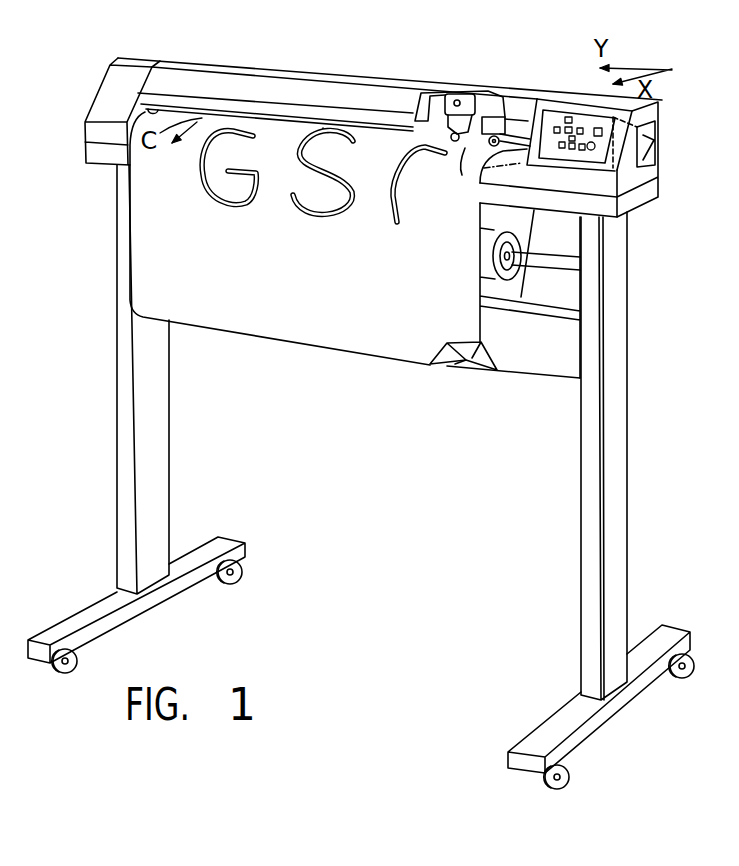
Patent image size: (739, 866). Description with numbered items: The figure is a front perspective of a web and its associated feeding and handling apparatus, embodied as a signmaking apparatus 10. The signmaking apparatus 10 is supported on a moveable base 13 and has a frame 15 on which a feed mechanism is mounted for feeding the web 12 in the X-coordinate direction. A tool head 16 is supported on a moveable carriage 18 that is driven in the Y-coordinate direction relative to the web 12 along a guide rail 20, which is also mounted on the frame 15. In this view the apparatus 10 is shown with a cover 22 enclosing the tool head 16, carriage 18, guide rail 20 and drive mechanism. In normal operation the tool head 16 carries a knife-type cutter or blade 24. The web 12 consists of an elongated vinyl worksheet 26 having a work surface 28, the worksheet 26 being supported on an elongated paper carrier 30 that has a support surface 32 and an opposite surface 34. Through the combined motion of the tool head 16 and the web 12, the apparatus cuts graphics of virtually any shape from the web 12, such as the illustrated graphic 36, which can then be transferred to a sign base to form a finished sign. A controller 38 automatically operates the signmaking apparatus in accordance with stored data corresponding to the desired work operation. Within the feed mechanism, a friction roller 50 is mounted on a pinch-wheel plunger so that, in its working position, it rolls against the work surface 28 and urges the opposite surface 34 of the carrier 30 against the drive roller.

The signmaking apparatus 10 is at (369, 396).
The web 12 is at (287, 253).
The moveable base 13 is at (612, 449).
The frame 15 is at (105, 103).
The tool head 16 is at (447, 95).
The moveable carriage 18 is at (486, 92).
The guide rail 20 is at (420, 91).
The cover 22 is at (227, 67).
The knife-type cutter or blade 24 is at (465, 148).
The vinyl worksheet 26 is at (450, 343).
The work surface 28 is at (257, 313).
The paper carrier 30 is at (487, 358).
The support surface 32 is at (468, 364).
The opposite surface 34 is at (484, 332).
The graphic 36 is at (340, 222).
The controller 38 is at (648, 142).
The friction roller 50 is at (497, 128).